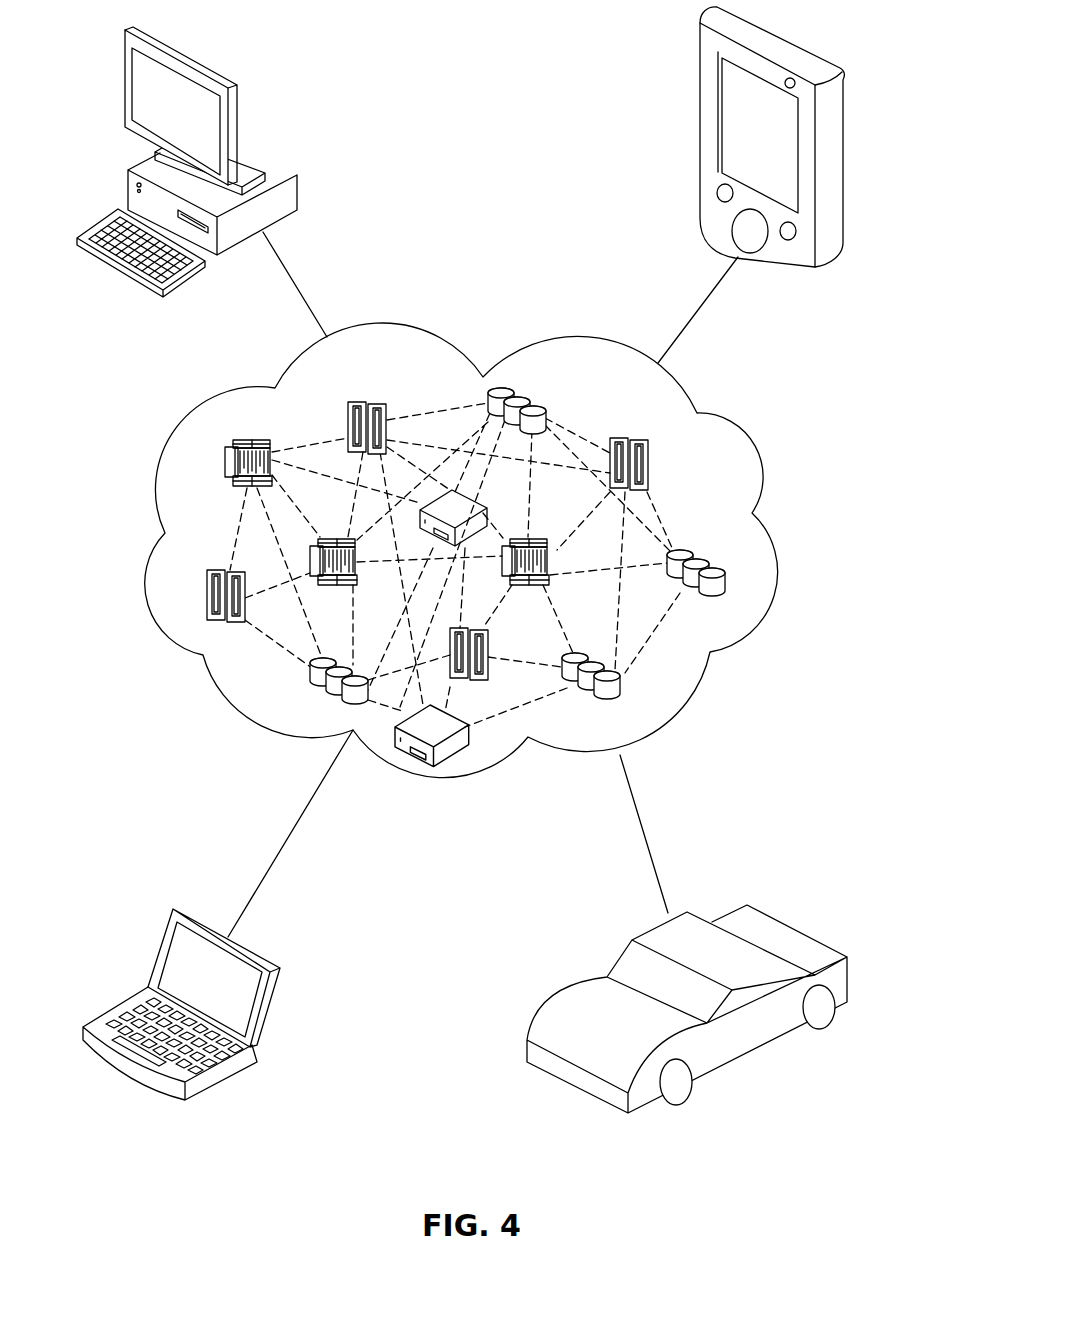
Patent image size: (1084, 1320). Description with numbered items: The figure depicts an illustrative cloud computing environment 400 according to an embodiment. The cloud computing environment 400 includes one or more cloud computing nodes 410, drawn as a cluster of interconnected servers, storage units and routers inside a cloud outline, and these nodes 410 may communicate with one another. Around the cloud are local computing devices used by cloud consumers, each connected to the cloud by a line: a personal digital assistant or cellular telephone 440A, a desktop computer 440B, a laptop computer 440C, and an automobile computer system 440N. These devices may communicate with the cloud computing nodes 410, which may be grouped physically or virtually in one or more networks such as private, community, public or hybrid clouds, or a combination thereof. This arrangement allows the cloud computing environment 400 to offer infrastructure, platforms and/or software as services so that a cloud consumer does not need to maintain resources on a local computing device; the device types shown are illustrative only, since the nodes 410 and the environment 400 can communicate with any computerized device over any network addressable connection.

The cloud computing environment 400 is at (755, 628).
The cloud computing nodes 410 is at (705, 488).
The personal digital assistant (PDA) or cellular telephone 440A is at (700, 85).
The desktop computer 440B is at (298, 190).
The laptop computer 440C is at (280, 977).
The automobile computer system 440N is at (848, 977).